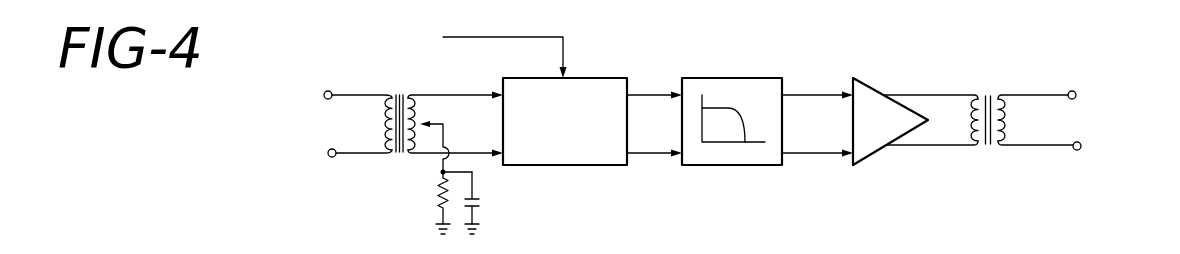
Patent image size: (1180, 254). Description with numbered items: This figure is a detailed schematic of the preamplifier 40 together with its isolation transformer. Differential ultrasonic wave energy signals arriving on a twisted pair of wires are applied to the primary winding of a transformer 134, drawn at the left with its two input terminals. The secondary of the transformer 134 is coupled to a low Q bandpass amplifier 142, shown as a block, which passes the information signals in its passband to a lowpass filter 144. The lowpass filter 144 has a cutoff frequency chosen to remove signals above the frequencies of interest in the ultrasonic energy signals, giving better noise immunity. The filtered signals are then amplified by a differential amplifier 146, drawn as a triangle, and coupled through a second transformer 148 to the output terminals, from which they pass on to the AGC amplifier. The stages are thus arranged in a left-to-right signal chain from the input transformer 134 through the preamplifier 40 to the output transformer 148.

The preamplifier 40 is at (712, 15).
The transformer 134 is at (395, 168).
The low Q bandpass amplifier 142 is at (562, 167).
The lowpass filter 144 is at (738, 78).
The differential amplifier 146 is at (881, 155).
The transformer 148 is at (988, 164).